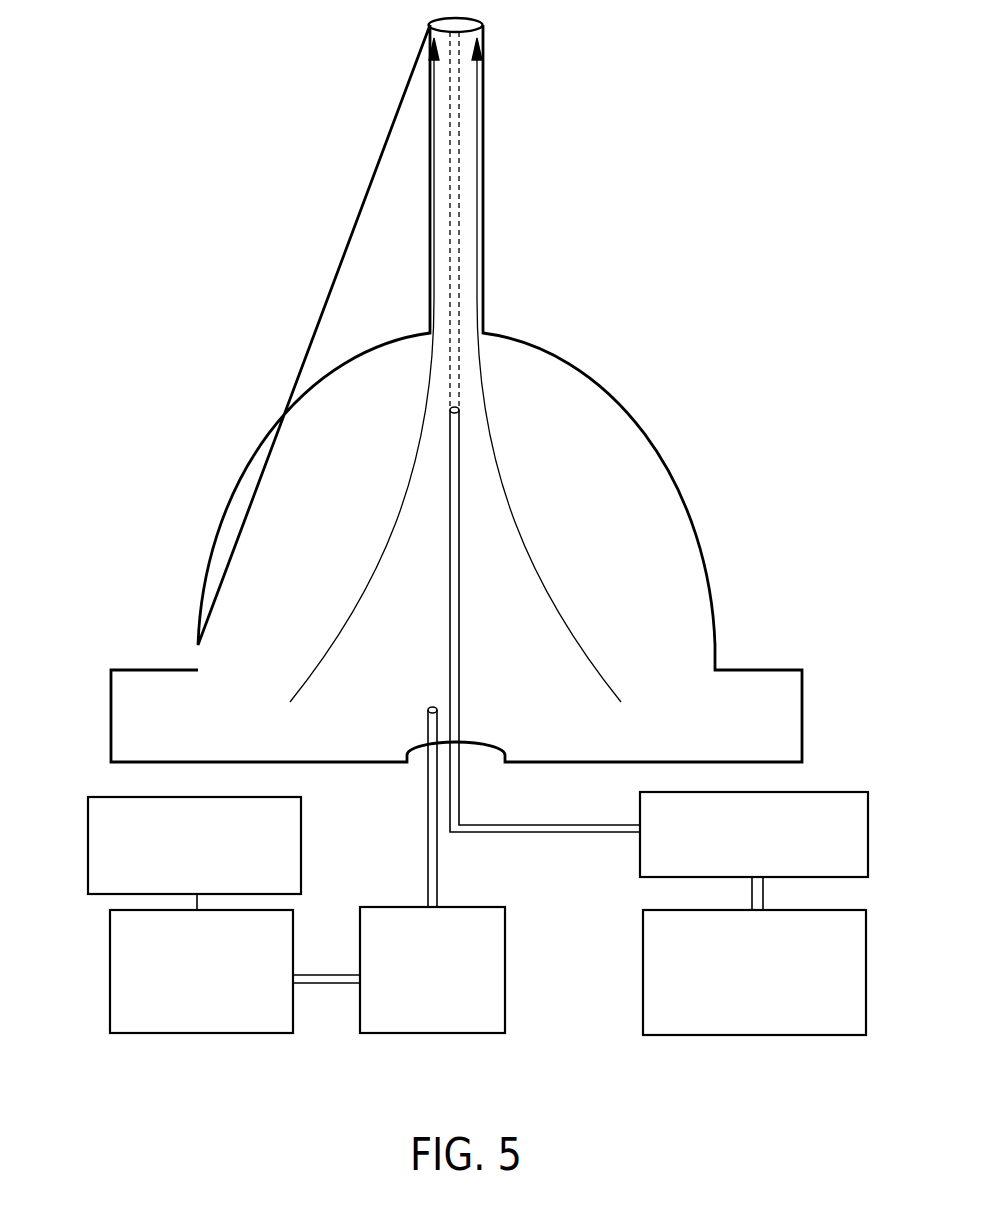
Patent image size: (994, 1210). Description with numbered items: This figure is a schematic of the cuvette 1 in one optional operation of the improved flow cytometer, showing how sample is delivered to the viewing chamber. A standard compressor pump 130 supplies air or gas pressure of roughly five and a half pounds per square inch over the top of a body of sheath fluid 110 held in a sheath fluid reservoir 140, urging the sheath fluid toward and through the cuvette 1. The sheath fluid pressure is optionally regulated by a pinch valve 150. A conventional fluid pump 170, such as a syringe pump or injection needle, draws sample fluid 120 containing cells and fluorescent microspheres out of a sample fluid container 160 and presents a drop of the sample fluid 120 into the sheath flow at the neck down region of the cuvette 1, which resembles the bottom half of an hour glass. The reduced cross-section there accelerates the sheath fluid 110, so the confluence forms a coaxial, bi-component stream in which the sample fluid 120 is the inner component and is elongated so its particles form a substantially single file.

The cuvette 1 is at (665, 457).
The sheath fluid 110 is at (527, 540).
The sample fluid 120 is at (438, 348).
The compressor pump 130 is at (102, 797).
The sheath fluid reservoir 140 is at (110, 1005).
The pinch valve 150 is at (407, 907).
The sample fluid container 160 is at (807, 1036).
The fluid pump 170 is at (790, 792).